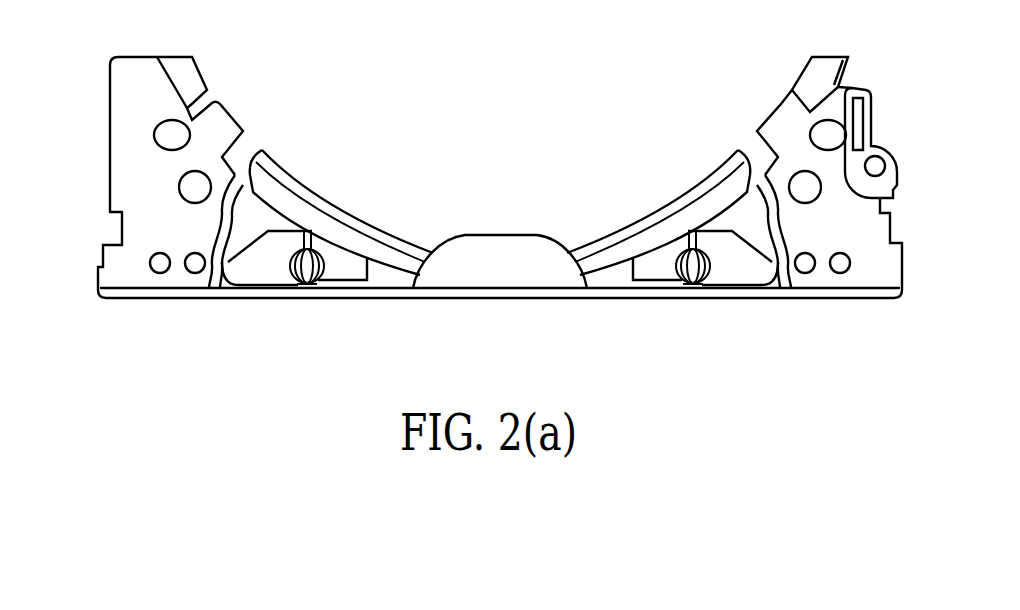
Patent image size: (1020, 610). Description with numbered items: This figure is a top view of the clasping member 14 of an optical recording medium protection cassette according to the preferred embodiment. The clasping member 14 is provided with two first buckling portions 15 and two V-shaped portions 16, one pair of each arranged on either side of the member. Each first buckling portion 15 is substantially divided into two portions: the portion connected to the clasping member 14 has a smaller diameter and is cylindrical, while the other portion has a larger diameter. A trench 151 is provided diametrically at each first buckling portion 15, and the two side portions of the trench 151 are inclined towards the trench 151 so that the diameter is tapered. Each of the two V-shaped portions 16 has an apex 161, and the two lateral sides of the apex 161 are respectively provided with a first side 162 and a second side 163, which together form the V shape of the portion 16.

The clasping member 14 is at (127, 98).
The first buckling portion 15 is at (318, 285).
The trench 151 is at (305, 280).
The V-shaped portion 16 is at (500, 177).
The apex 161 is at (262, 180).
The first side 162 is at (246, 158).
The second side 163 is at (298, 192).